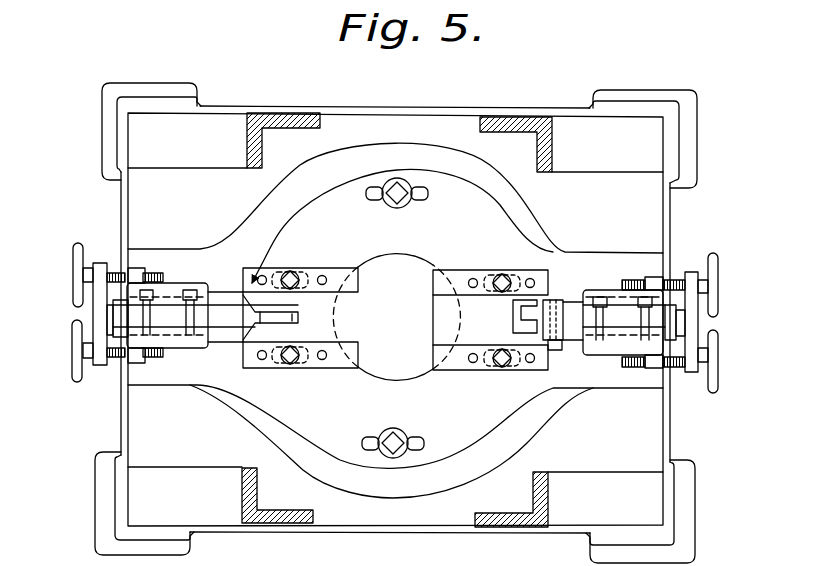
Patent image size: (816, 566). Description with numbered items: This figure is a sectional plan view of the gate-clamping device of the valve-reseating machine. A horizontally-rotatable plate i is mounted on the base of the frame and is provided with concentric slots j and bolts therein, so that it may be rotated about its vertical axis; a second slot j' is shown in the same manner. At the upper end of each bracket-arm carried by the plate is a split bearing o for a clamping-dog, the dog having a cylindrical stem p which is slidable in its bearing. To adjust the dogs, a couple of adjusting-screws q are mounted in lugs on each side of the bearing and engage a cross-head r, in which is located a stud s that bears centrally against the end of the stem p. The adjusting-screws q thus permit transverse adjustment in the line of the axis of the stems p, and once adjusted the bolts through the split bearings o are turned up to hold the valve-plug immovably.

The split bearing o is at (176, 281).
The concentric slot j is at (382, 203).
The nut j' is at (407, 429).
The horizontally-rotatable plate i is at (548, 436).
The adjusting-screw q is at (78, 275).
The cylindrical stem p is at (116, 302).
The stud s is at (103, 322).
The cross-head r is at (100, 365).